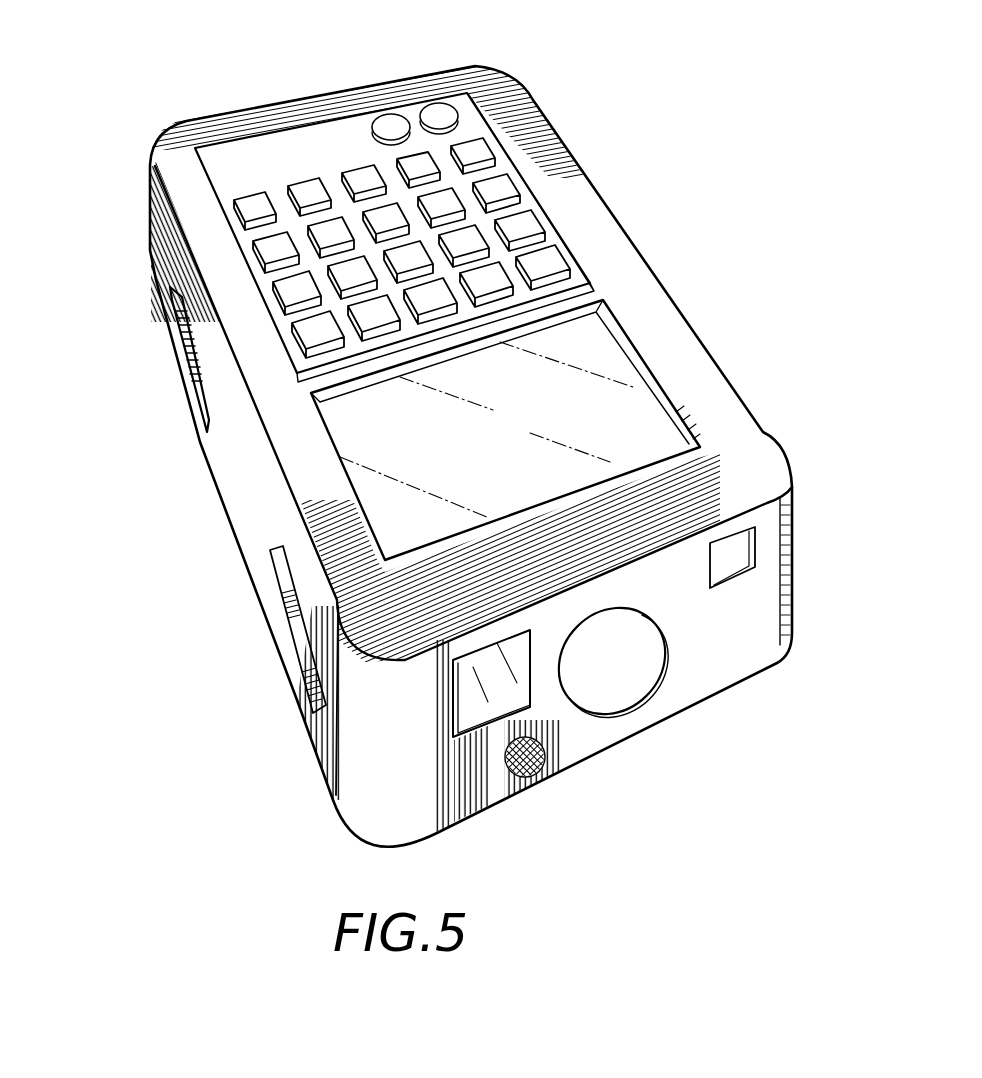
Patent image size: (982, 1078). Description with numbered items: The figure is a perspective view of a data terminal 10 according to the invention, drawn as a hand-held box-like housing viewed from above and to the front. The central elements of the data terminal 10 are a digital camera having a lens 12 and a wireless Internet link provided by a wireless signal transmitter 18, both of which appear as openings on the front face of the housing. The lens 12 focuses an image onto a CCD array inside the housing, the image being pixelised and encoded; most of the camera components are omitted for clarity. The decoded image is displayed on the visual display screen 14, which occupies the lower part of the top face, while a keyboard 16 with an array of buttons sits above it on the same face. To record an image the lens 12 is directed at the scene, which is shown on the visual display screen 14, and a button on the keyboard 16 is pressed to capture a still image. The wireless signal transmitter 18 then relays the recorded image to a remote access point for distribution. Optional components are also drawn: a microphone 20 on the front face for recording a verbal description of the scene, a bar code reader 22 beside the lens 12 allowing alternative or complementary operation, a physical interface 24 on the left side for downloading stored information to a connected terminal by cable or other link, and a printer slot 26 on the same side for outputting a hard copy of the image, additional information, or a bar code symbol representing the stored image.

The data terminal 10 is at (700, 132).
The lens 12 is at (623, 680).
The visual display screen 14 is at (607, 420).
The keyboard 16 is at (505, 155).
The wireless signal transmitter 18 is at (733, 557).
The microphone 20 is at (547, 753).
The bar code reader 22 is at (473, 707).
The physical interface 24 is at (180, 355).
The printer slot 26 is at (270, 623).